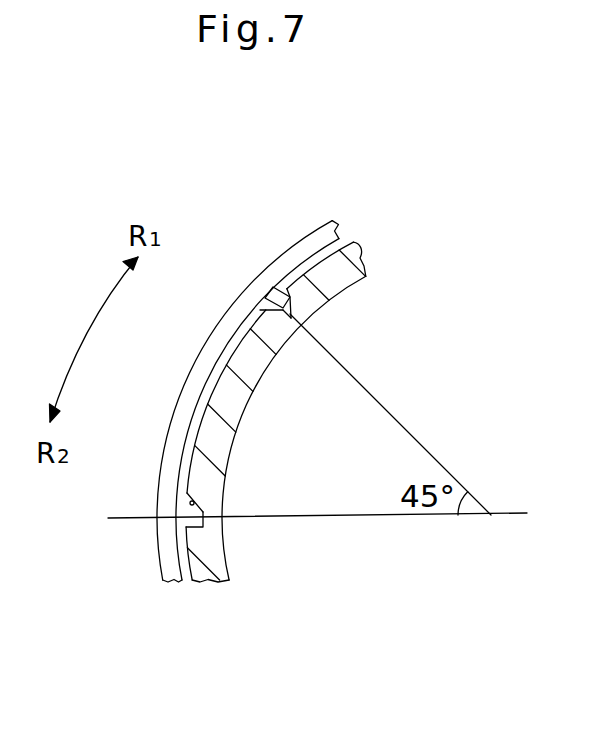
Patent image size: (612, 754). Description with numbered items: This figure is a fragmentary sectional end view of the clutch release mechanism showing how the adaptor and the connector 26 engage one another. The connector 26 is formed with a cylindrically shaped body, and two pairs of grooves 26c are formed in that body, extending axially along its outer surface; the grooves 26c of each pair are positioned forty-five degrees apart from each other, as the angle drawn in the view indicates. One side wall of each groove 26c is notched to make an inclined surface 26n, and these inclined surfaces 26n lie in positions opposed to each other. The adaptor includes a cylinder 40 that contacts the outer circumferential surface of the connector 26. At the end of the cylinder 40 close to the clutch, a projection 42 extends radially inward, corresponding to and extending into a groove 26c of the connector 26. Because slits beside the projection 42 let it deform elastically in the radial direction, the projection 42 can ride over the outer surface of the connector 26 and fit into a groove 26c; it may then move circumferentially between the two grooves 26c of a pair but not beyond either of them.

The cylinder portion 40 is at (193, 368).
The projection 42 is at (272, 287).
The connector 26 is at (333, 287).
The groove 26c is at (362, 263).
The inclined surface 26n is at (273, 311).